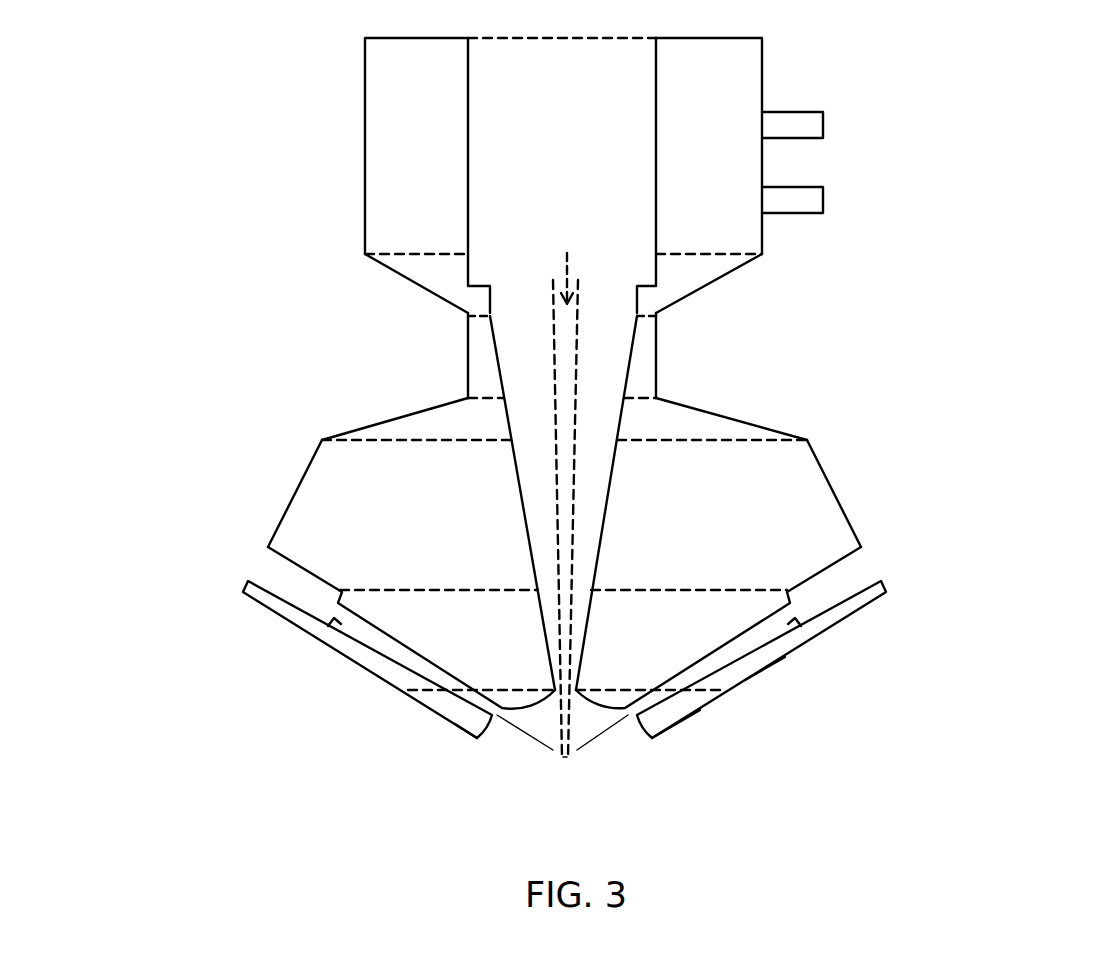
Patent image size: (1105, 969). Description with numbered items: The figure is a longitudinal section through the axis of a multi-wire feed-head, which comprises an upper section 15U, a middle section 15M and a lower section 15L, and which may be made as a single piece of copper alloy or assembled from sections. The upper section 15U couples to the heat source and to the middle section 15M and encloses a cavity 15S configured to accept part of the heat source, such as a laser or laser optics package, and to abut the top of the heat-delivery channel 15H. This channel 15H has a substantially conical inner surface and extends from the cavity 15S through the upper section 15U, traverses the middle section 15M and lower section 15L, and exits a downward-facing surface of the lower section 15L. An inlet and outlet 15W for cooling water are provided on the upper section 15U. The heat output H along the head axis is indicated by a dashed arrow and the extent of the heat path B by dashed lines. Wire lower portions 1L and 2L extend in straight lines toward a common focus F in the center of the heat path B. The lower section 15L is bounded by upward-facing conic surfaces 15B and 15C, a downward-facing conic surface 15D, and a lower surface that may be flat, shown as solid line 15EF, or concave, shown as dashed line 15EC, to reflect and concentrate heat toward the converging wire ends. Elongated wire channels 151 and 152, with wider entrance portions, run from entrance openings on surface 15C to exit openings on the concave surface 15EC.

The upper section 15U is at (331, 35).
The cavity 15S is at (563, 155).
The inlet and outlet 15W is at (823, 122).
The middle section 15M is at (704, 313).
The heat-delivery channel 15H is at (523, 355).
The upward-facing surface 15B is at (728, 418).
The upward-facing surface 15C is at (293, 493).
The lower section 15L is at (1002, 405).
The wire channel 151 is at (380, 655).
The wire channel 152 is at (773, 625).
The concave lower surface 15EC is at (475, 727).
The flat lower surface 15EF is at (710, 698).
The downward-facing surface 15D is at (763, 673).
The heat path B is at (565, 495).
The heat output H is at (573, 248).
The wire lower portion 1L is at (525, 738).
The wire lower portion 2L is at (593, 743).
The focal point F is at (565, 758).